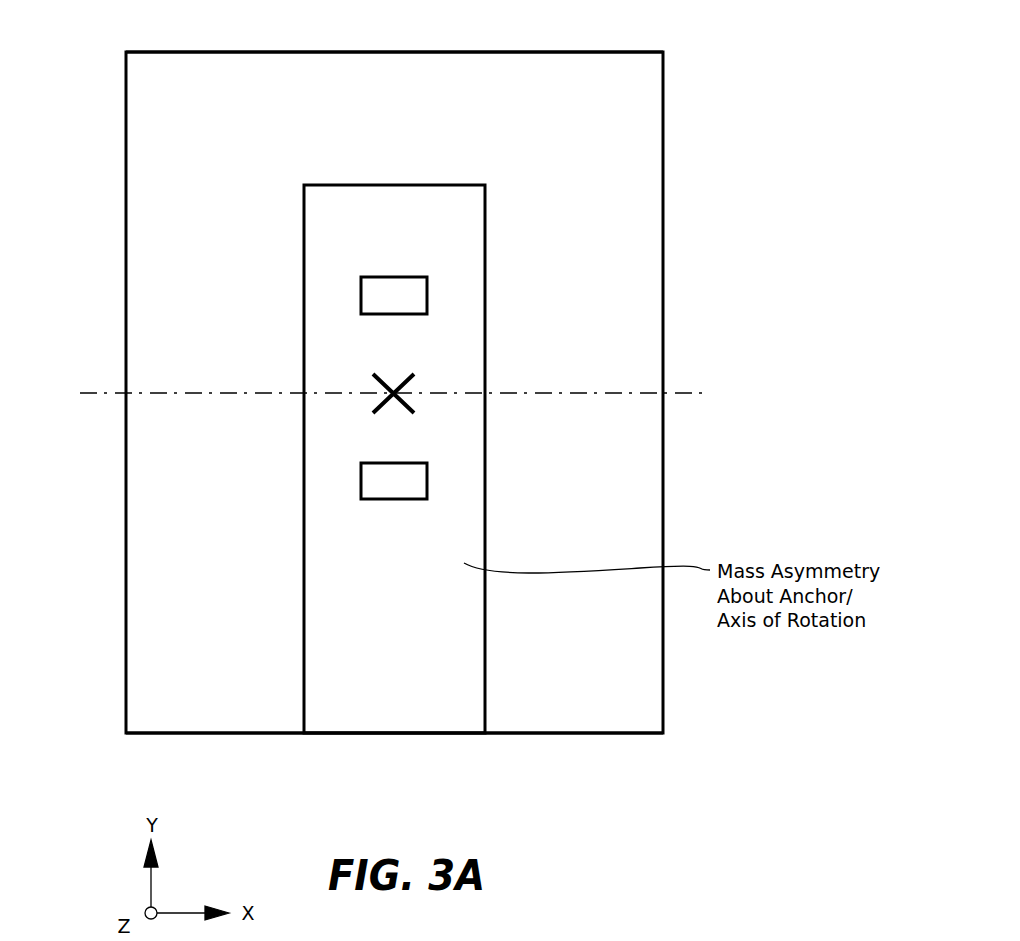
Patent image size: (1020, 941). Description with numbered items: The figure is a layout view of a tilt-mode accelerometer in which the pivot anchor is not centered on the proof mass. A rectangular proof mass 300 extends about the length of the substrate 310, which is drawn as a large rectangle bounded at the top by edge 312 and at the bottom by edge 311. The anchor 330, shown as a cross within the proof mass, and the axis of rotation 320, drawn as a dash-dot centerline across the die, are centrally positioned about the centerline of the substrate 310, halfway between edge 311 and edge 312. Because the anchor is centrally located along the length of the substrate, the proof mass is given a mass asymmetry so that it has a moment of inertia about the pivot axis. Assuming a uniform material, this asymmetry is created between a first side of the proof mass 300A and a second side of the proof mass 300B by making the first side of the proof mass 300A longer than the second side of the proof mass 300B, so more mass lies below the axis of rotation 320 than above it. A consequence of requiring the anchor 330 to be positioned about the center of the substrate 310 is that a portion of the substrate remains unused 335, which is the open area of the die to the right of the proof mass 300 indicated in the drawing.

The substrate 310 is at (540, 735).
The edge 312 is at (256, 50).
The edge 311 is at (215, 735).
The unused portion of the substrate 335 is at (596, 121).
The axis of rotation 320 is at (447, 392).
The proof mass 300 is at (326, 528).
The second side of the proof mass 300B is at (380, 210).
The first side of the proof mass 300A is at (348, 605).
The anchor 330 is at (393, 380).